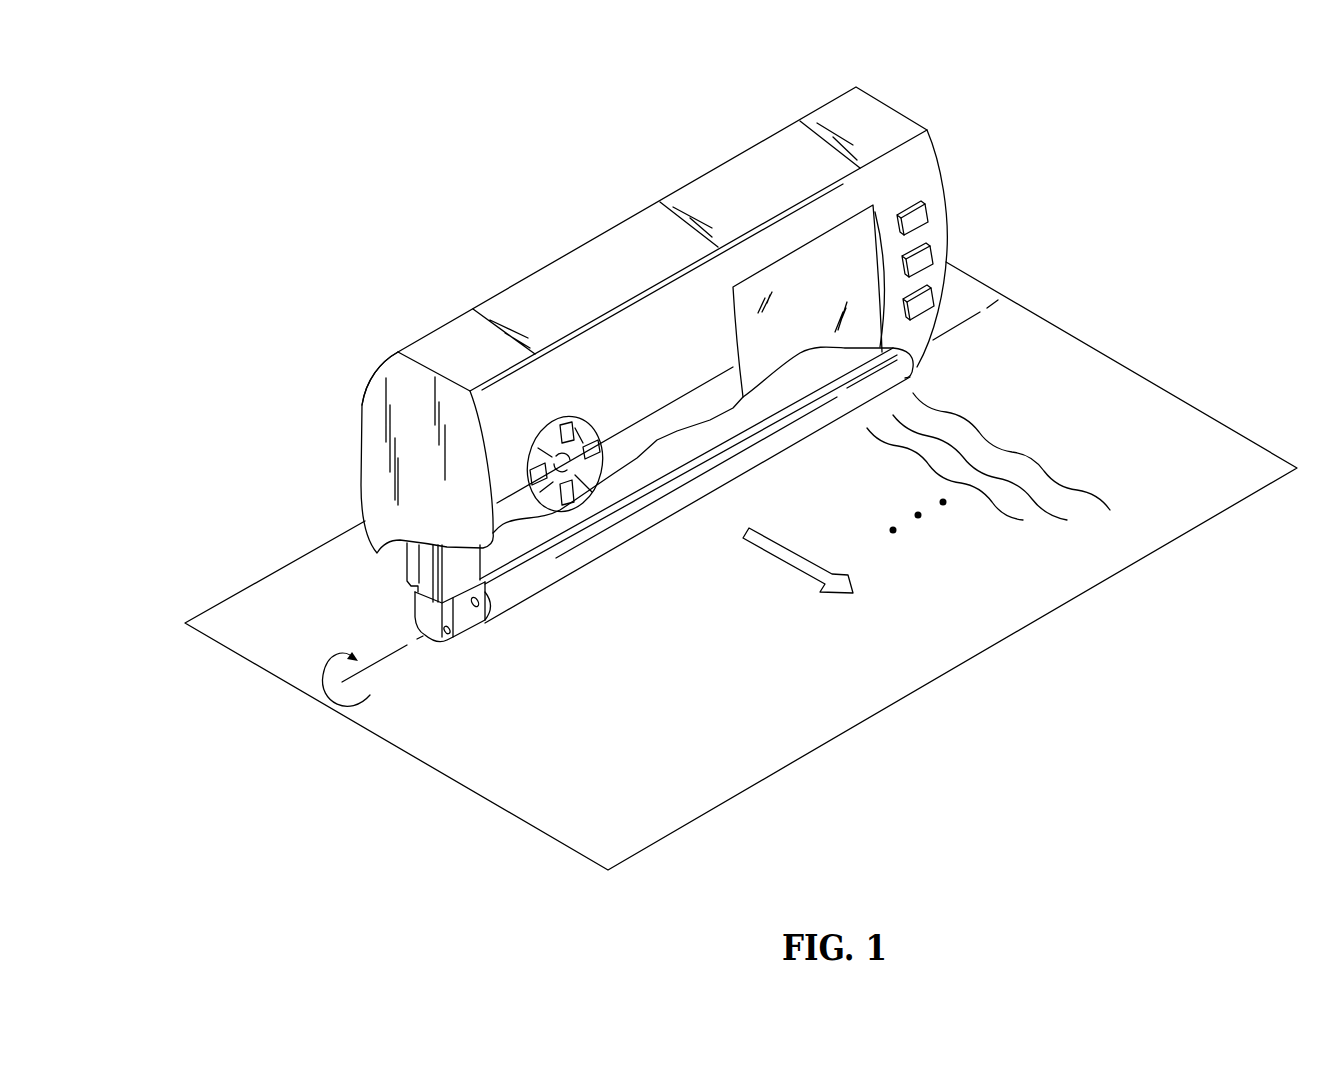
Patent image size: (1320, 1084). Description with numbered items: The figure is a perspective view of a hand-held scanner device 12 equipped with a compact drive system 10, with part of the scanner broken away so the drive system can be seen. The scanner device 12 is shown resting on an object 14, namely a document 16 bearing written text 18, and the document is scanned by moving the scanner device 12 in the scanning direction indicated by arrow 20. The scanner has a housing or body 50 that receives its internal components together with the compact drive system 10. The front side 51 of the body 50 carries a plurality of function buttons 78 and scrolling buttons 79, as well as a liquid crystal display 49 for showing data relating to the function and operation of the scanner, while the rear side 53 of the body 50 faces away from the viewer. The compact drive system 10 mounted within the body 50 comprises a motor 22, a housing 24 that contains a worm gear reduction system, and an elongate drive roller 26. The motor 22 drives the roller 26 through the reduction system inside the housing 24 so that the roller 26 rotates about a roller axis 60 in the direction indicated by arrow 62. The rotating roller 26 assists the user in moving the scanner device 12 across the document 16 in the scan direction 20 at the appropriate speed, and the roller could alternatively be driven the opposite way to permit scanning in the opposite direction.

The compact drive system 10 is at (304, 246).
The hand-held scanner device 12 is at (423, 326).
The object 14 is at (281, 560).
The document 16 is at (741, 566).
The written text 18 is at (1050, 468).
The arrow 20 is at (778, 565).
The motor 22 is at (458, 564).
The housing 24 is at (467, 638).
The elongate drive roller 26 is at (597, 562).
The liquid crystal display 49 is at (733, 329).
The housing 50 is at (375, 458).
The front side 51 is at (920, 167).
The rear side 53 is at (367, 388).
The roller axis 60 is at (387, 662).
The arrow 62 is at (325, 660).
The function buttons 78 is at (933, 254).
The scrolling buttons 79 is at (595, 440).